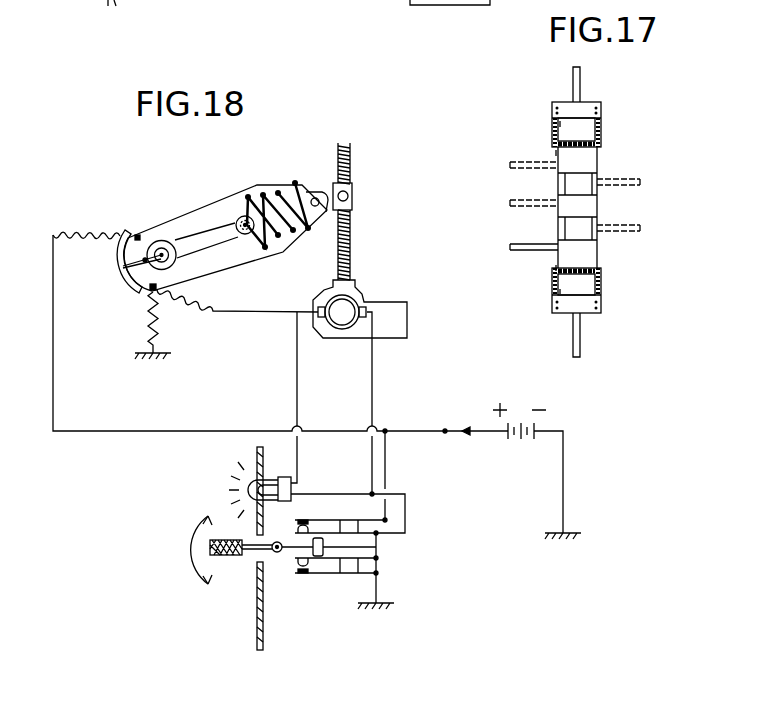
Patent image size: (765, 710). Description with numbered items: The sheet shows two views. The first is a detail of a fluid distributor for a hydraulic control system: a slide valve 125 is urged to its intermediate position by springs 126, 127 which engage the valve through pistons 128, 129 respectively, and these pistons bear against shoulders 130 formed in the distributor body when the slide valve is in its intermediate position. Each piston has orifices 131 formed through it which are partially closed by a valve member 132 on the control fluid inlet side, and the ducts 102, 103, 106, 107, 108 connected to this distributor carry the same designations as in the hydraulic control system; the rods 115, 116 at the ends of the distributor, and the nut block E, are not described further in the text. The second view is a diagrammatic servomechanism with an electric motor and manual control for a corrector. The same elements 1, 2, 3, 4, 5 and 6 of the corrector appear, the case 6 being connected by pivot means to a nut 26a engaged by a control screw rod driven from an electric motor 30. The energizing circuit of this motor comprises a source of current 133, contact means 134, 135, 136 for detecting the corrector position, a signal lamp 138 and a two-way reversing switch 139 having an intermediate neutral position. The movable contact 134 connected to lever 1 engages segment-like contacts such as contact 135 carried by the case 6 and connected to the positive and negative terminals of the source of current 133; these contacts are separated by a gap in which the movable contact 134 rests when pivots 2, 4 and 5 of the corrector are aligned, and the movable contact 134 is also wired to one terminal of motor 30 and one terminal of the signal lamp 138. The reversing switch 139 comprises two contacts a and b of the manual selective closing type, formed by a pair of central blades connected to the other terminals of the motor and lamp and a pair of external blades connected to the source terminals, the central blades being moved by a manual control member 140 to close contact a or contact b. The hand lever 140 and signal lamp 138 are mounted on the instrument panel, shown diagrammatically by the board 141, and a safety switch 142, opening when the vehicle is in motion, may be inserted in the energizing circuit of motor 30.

In FIG. 18, the lever 1 is at (205, 240).
In FIG. 18, the pivot 2 is at (165, 240).
In FIG. 18, the corrector element 3 is at (262, 197).
In FIG. 18, the pivot 4 is at (244, 216).
In FIG. 18, the pivot 5 is at (316, 197).
In FIG. 18, the case 6 is at (240, 262).
In FIG. 18, the nut block E is at (352, 196).
In FIG. 18, the nut 26a is at (350, 242).
In FIG. 18, the electric motor 30 is at (352, 306).
In FIG. 18, the source of current 133 is at (516, 445).
In FIG. 18, the movable contact 134 is at (139, 236).
In FIG. 18, the segmentlike contact 135 is at (122, 266).
In FIG. 18, the contact means 136 is at (135, 291).
In FIG. 18, the signal lamp 138 is at (247, 478).
In FIG. 18, the reversing switch 139 is at (345, 547).
In FIG. 18, the manual control member 140 is at (272, 551).
In FIG. 18, the board 141 is at (257, 616).
In FIG. 18, the safety switch 142 is at (445, 430).
In FIG. 18, the contact a is at (325, 570).
In FIG. 18, the contact b is at (329, 521).
In FIG. 17, the duct 102 is at (626, 183).
In FIG. 17, the duct 103 is at (636, 230).
In FIG. 17, the duct 106 is at (512, 204).
In FIG. 17, the duct 107 is at (515, 164).
In FIG. 17, the duct 108 is at (528, 250).
In FIG. 17, the upper rod 115 is at (576, 85).
In FIG. 17, the lower rod 116 is at (582, 334).
In FIG. 17, the slide valve 125 is at (588, 207).
In FIG. 17, the spring 126 is at (604, 111).
In FIG. 17, the spring 127 is at (604, 303).
In FIG. 17, the piston 128 is at (603, 133).
In FIG. 17, the piston 129 is at (604, 283).
In FIG. 17, the shoulder 130 is at (604, 268).
In FIG. 17, the orifice 131 is at (557, 152).
In FIG. 17, the valve member 132 is at (555, 126).